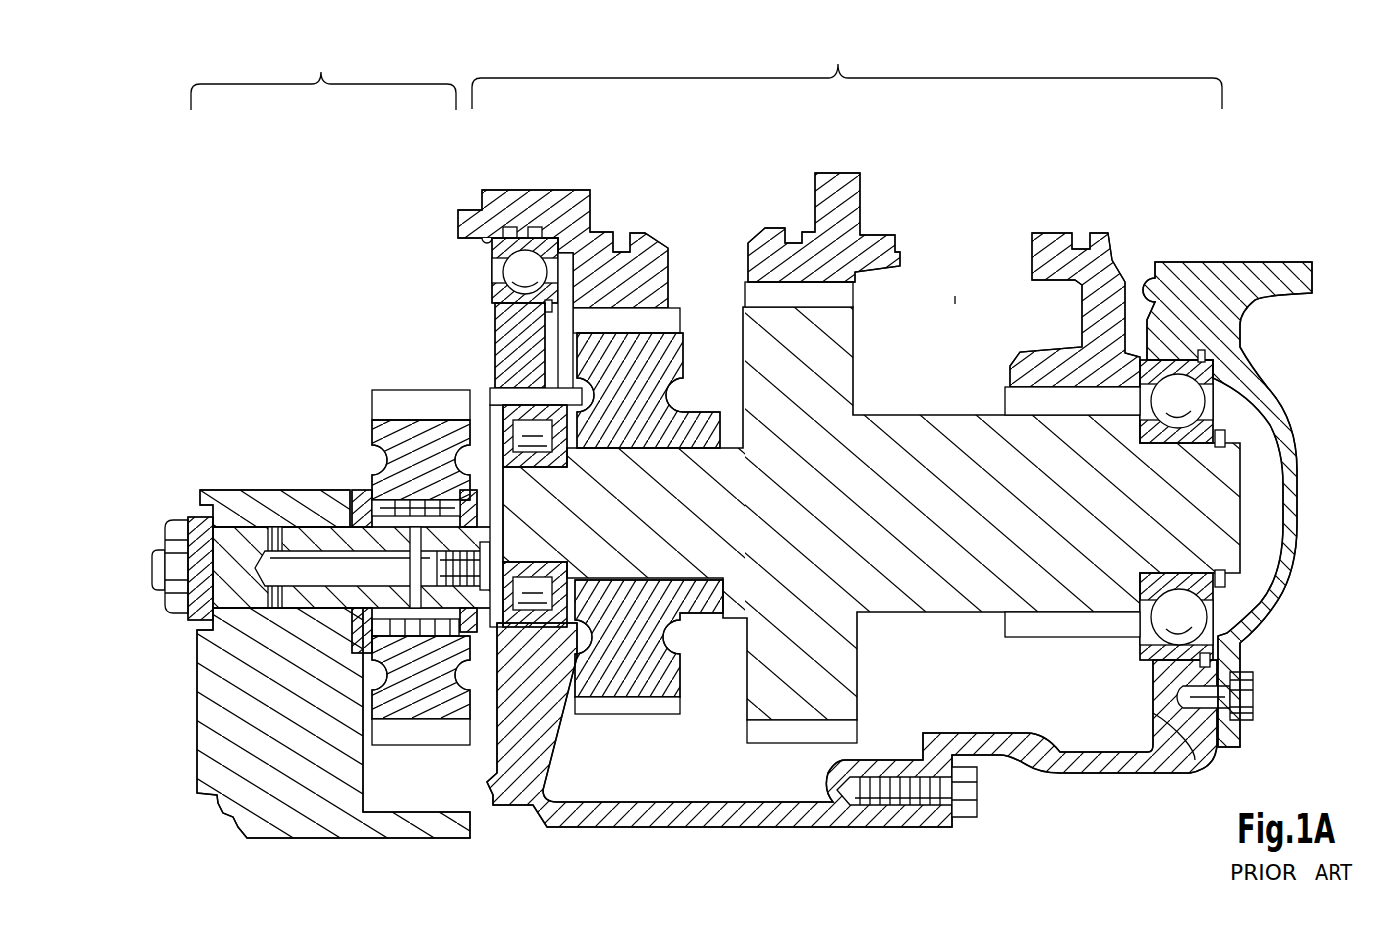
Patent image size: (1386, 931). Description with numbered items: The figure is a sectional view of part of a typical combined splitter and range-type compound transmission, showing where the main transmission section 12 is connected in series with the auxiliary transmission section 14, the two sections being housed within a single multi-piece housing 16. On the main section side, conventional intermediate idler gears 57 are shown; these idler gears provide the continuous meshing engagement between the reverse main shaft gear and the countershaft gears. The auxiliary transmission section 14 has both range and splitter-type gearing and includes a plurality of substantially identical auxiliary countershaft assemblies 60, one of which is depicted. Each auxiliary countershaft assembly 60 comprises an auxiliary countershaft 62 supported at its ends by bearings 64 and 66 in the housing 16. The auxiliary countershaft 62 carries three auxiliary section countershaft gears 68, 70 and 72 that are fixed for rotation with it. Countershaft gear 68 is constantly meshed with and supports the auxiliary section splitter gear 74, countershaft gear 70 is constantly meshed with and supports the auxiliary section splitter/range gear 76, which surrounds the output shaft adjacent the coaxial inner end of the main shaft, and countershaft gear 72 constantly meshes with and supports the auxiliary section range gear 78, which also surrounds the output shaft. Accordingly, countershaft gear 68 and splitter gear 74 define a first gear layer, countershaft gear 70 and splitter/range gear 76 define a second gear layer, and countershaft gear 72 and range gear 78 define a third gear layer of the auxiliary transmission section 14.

The main transmission section 12 is at (321, 72).
The auxiliary transmission section 14 is at (838, 64).
The housing 16 is at (245, 739).
The intermediate idler gears 57 is at (415, 692).
The auxiliary countershaft assemblies 60 is at (917, 277).
The auxiliary countershaft 62 is at (948, 563).
The bearing 64 is at (530, 432).
The bearing 66 is at (1187, 405).
The auxiliary section countershaft gear 68 is at (623, 668).
The auxiliary section countershaft gear 70 is at (813, 676).
The auxiliary section countershaft gear 72 is at (1065, 622).
The auxiliary section splitter gear 74 is at (650, 278).
The auxiliary section splitter/range gear 76 is at (753, 260).
The auxiliary section range gear 78 is at (1093, 263).